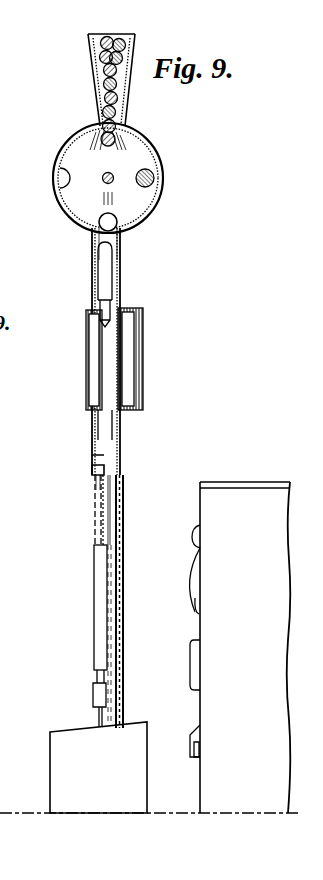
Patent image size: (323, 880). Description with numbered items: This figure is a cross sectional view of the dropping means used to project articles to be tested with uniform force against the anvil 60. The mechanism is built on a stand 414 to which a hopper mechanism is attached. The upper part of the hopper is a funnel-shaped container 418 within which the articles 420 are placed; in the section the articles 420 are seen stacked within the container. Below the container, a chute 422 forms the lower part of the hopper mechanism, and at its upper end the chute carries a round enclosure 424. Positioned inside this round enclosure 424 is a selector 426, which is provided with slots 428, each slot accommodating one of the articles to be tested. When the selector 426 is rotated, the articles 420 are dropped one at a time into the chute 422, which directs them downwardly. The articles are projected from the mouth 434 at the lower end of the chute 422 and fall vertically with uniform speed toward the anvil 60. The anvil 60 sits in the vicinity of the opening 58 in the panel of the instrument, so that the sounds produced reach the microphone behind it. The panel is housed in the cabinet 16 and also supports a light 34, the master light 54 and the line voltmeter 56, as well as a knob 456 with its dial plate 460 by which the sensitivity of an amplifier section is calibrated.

The cabinet 16 is at (205, 492).
The light 34 is at (193, 535).
The master light 54 is at (190, 578).
The line voltmeter 56 is at (196, 608).
The opening 58 is at (190, 680).
The anvil 60 is at (98, 767).
The stand 414 is at (124, 516).
The funnel-shaped container 418 is at (122, 98).
The articles 420 is at (137, 50).
The chute 422 is at (120, 266).
The round enclosure 424 is at (160, 213).
The selector 426 is at (152, 154).
The slots 428 is at (60, 190).
The mouth 434 is at (100, 468).
The knob 456 is at (193, 758).
The dial plate 460 is at (195, 724).